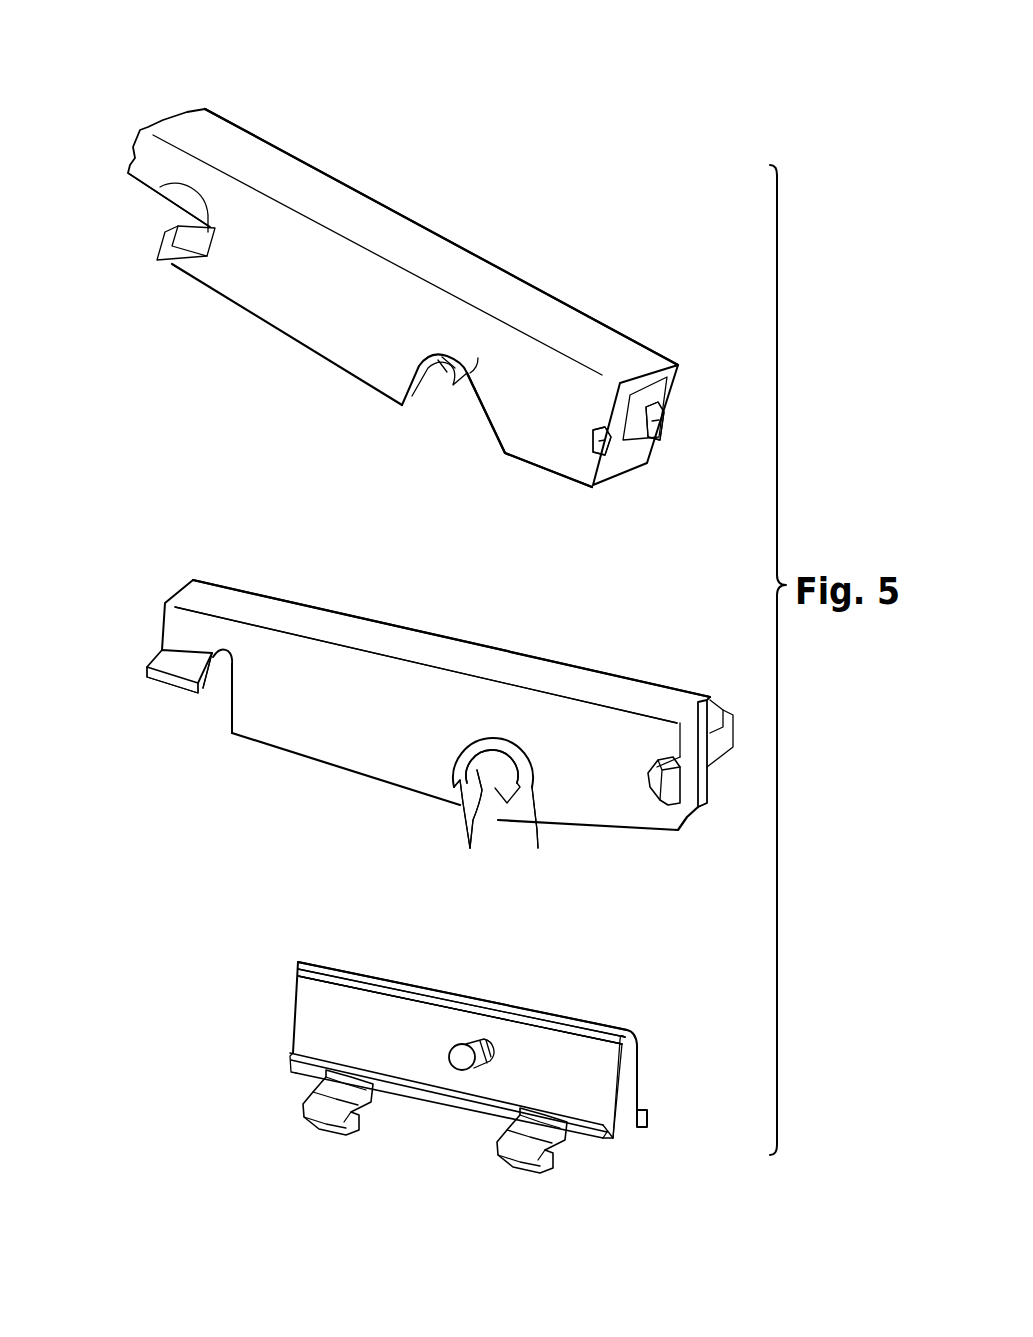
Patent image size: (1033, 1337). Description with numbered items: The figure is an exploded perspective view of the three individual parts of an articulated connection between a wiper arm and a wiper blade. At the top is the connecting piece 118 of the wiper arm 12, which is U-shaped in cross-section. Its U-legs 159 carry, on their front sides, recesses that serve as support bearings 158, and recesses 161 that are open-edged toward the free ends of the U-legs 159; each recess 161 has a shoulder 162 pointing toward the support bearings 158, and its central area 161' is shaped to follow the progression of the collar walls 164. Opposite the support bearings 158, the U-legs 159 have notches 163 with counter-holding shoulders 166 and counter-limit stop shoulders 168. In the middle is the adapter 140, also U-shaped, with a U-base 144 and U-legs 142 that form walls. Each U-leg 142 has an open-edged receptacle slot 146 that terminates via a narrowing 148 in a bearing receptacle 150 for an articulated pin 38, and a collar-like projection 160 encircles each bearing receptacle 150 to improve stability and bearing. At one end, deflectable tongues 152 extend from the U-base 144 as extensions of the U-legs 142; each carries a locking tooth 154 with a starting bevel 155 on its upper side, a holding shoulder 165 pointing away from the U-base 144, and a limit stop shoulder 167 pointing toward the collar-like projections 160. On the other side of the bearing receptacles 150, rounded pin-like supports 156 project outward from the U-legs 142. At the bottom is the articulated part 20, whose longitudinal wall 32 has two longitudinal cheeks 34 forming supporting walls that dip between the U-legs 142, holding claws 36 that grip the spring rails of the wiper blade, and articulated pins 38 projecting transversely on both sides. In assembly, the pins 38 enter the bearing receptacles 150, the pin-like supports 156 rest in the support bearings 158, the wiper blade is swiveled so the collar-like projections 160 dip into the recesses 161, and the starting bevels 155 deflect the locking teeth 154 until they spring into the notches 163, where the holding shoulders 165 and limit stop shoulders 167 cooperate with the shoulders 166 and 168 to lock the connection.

The wiper arm 12 is at (182, 98).
The connecting piece 118 is at (456, 230).
The counter-limit stop shoulder 168 is at (160, 187).
The notch 163 is at (162, 213).
The counter-holding shoulder 166 is at (163, 262).
The shoulder 162 is at (407, 382).
The recess 161 is at (510, 430).
The central area of recess 161' is at (541, 299).
The support bearing 158 is at (592, 446).
The U-leg of connecting piece 159 is at (608, 473).
The adapter 140 is at (217, 744).
The deflectable tongue 152 is at (187, 638).
The starting bevel 155 is at (165, 665).
The locking tooth 154 is at (141, 685).
The holding shoulder 165 is at (207, 693).
The limit stop shoulder 167 is at (218, 688).
The bearing receptacle 150 is at (492, 766).
The collar wall 164 is at (513, 747).
The receptacle slot 146 is at (463, 807).
The narrowing 148 is at (477, 805).
The collar-like projection 160 is at (527, 807).
The U-base 144 is at (703, 697).
The pin-like support 156 is at (726, 710).
The U-leg of adapter 142 is at (700, 805).
The articulated part 20 is at (283, 1080).
The longitudinal wall 32 is at (553, 1018).
The longitudinal cheek 34 is at (612, 1072).
The articulated pin 38 is at (462, 1052).
The holding claw 36 is at (328, 1120).